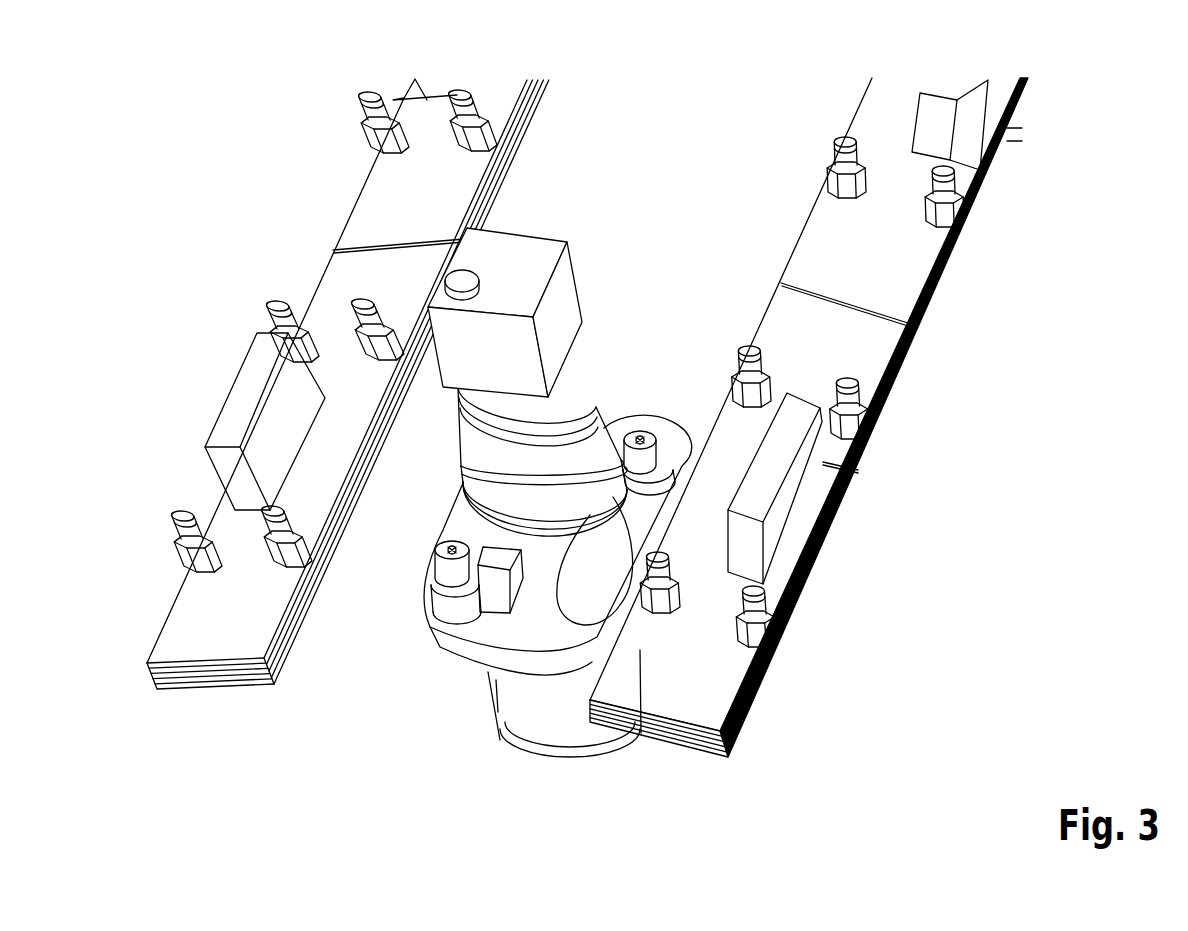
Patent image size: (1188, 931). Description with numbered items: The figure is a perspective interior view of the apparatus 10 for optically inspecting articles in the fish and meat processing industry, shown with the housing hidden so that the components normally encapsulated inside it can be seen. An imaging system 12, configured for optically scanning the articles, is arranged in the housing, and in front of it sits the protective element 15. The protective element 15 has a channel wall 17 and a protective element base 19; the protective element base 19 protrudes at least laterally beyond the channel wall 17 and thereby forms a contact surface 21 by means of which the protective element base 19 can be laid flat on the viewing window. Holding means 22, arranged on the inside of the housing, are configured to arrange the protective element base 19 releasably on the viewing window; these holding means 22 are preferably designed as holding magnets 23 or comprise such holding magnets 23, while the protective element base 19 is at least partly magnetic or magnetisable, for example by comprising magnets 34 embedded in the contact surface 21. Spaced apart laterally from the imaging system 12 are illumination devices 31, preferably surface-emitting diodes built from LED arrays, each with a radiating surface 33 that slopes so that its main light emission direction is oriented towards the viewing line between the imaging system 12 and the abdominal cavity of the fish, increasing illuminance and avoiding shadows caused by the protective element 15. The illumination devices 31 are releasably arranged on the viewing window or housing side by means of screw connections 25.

The apparatus 10 is at (205, 216).
The imaging system 12 is at (566, 283).
The protective element 15 is at (503, 743).
The channel wall 17 is at (560, 733).
The protective element base 19 is at (468, 650).
The contact surface 21 is at (527, 634).
The holding means 22 is at (640, 416).
The holding magnets 23 is at (428, 583).
The screw connections 25 is at (366, 95).
The illumination device 31 is at (375, 190).
The radiating surface 33 is at (211, 689).
The magnets 34 is at (682, 468).